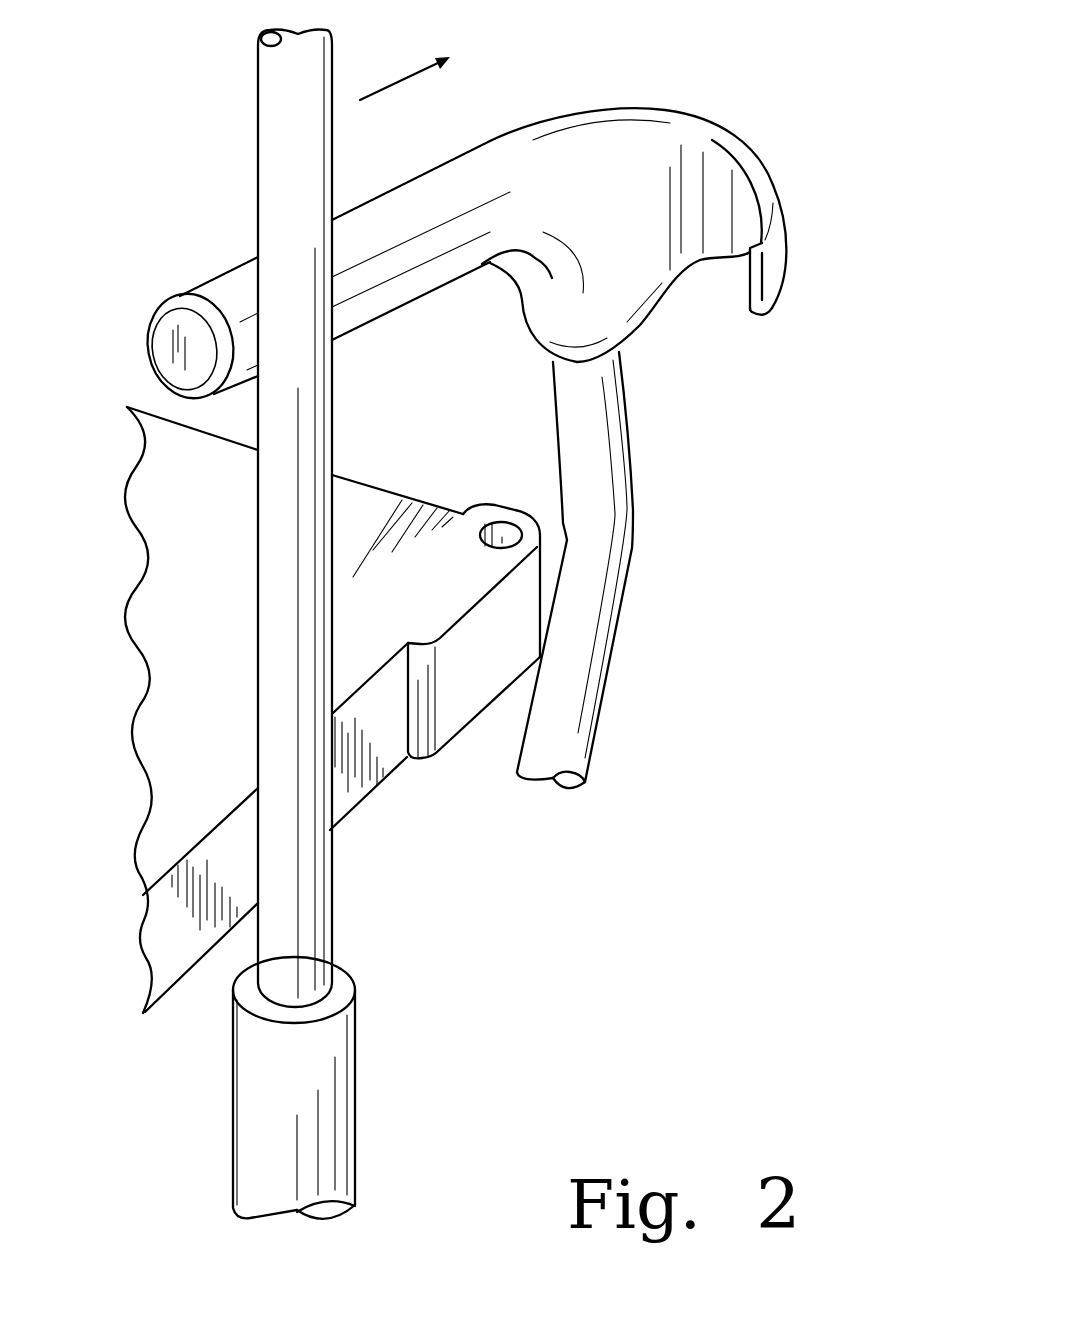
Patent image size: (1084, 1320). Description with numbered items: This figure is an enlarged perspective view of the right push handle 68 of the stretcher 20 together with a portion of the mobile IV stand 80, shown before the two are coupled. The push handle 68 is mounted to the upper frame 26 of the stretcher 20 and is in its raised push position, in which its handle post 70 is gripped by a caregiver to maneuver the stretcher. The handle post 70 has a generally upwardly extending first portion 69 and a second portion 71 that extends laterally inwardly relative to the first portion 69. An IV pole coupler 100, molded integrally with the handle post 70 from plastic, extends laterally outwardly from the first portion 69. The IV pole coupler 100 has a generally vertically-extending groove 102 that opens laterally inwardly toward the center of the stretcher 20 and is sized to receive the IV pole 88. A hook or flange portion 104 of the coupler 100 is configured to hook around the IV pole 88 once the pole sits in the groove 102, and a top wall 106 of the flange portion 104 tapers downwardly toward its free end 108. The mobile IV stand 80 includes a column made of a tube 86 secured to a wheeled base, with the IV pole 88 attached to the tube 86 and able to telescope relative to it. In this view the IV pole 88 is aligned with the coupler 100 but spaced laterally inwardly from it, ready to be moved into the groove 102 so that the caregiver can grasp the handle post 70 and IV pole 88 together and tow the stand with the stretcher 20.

The stretcher 20 is at (295, 710).
The upper frame 26 is at (130, 617).
The push handle 68 is at (666, 587).
The first portion 69 is at (537, 320).
The handle post 70 is at (692, 202).
The second portion 71 is at (423, 188).
The mobile IV stand 80 is at (320, 624).
The tube 86 is at (342, 1093).
The IV pole 88 is at (268, 526).
The IV pole coupler 100 is at (793, 224).
The vertically-extending groove 102 is at (710, 290).
The flange portion 104 is at (785, 233).
The top wall 106 is at (748, 163).
The free end 108 is at (757, 312).